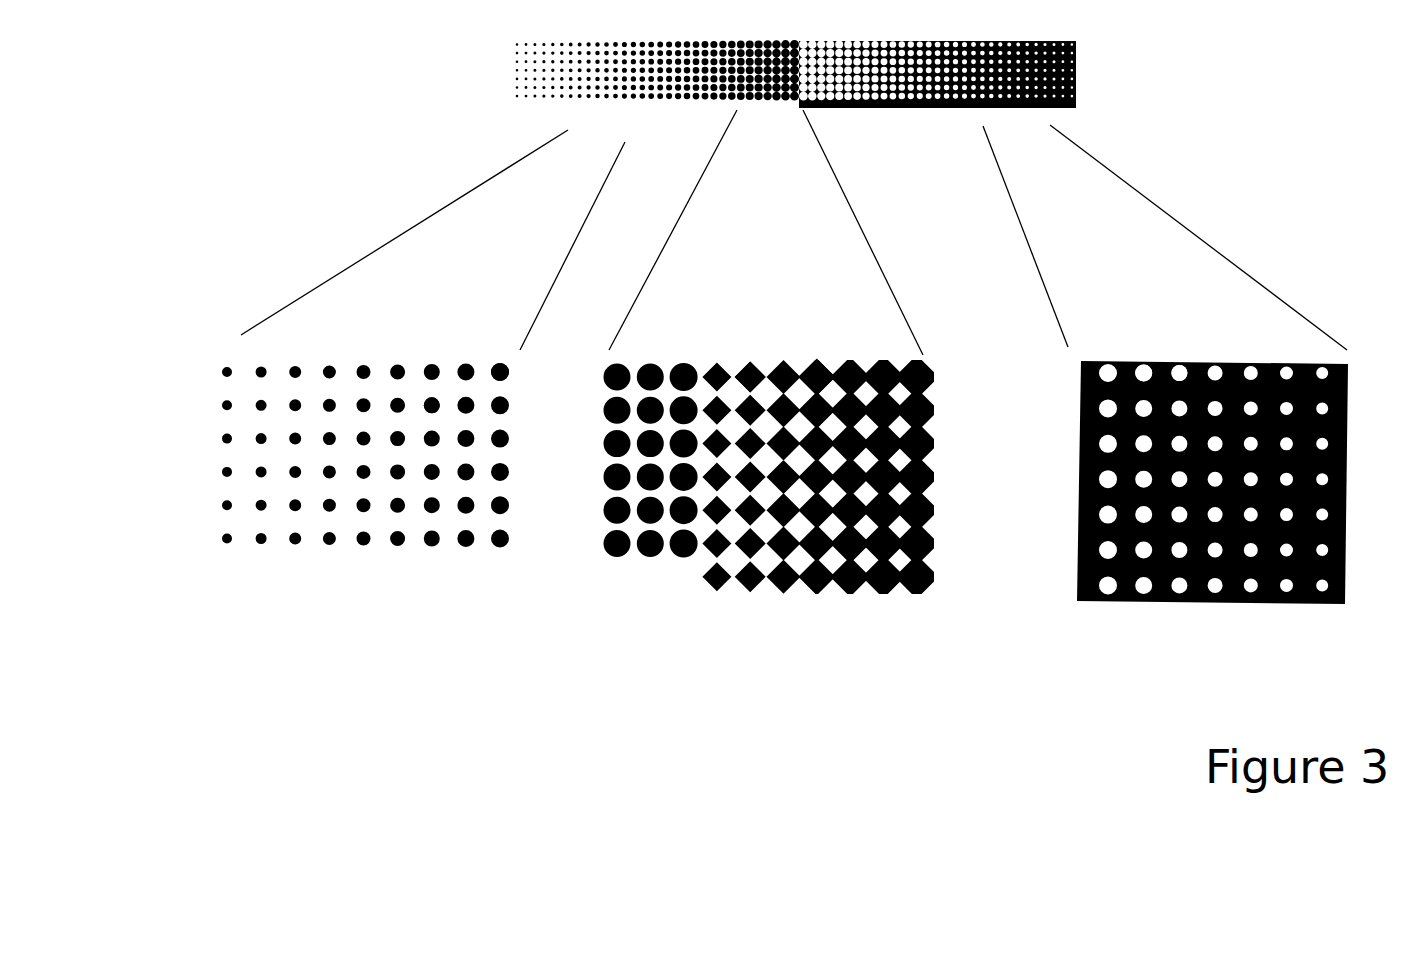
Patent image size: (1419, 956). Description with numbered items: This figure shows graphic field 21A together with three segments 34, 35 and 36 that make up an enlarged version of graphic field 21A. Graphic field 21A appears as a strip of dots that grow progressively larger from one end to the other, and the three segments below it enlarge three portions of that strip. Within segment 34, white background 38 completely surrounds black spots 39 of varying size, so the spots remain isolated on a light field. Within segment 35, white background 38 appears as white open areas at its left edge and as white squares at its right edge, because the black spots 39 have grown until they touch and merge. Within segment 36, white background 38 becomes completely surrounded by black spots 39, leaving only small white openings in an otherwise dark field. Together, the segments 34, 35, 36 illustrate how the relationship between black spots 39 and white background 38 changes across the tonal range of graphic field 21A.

The graphic field 21A is at (524, 62).
The segment 34 is at (325, 576).
The segment 35 is at (713, 588).
The segment 36 is at (1268, 603).
The white background 38 is at (448, 400).
The black spots 39 is at (500, 372).